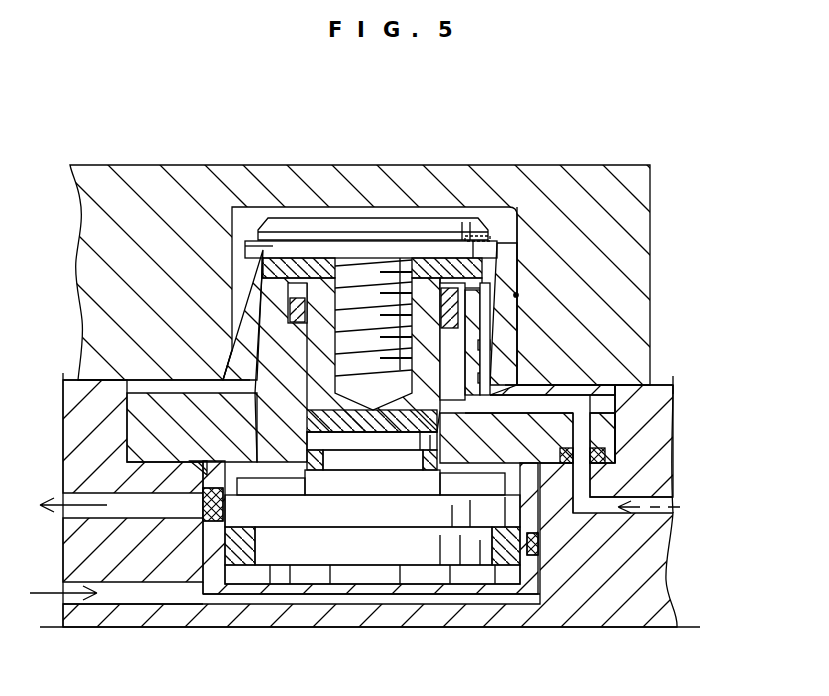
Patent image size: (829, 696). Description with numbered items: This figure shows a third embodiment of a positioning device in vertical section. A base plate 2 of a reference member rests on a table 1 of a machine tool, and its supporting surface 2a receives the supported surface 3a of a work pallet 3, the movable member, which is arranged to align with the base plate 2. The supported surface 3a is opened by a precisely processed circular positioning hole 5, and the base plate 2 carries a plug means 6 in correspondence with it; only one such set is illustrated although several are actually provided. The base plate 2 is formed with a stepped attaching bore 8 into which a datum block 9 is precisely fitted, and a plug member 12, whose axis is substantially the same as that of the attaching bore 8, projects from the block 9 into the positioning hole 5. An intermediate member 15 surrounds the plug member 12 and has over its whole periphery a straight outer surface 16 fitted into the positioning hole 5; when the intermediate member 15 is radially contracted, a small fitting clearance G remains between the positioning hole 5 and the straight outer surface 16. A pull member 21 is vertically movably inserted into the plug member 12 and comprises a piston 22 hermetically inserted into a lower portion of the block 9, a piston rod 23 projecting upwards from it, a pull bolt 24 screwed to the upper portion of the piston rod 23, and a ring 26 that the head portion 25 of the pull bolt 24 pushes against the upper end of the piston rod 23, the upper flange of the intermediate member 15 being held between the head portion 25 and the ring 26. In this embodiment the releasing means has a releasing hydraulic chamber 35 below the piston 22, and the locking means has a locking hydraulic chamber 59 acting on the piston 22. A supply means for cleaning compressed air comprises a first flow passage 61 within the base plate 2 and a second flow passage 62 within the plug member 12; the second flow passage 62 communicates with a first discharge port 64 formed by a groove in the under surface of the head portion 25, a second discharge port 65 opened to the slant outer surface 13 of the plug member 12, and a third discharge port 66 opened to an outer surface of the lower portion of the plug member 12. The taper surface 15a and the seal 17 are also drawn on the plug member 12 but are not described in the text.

The table 1 is at (675, 627).
The base plate 2 is at (667, 567).
The supporting surface 2a is at (655, 384).
The work pallet 3 is at (652, 200).
The supported surface 3a is at (660, 398).
The positioning hole 5 is at (507, 207).
The plug means 6 is at (640, 450).
The attaching bore 8 is at (127, 410).
The datum block 9 is at (620, 428).
The plug member 12 is at (250, 332).
The slant outer surface 13 is at (258, 313).
The intermediate member 15 is at (519, 313).
The tapered bore surface 15a is at (237, 347).
The straight outer surface 16 is at (505, 272).
The seal 17 is at (270, 297).
The pull member 21 is at (392, 595).
The piston 22 is at (443, 584).
The piston rod 23 is at (390, 482).
The pull bolt 24 is at (380, 215).
The head portion 25 is at (478, 241).
The ring 26 is at (277, 268).
The releasing hydraulic chamber 35 is at (270, 594).
The locking hydraulic chamber 59 is at (275, 488).
The first flow passage 61 is at (647, 513).
The second flow passage 62 is at (462, 395).
The first discharge port 64 is at (493, 238).
The second discharge port 65 is at (483, 352).
The third discharge port 66 is at (490, 378).
The fitting clearance G is at (518, 295).